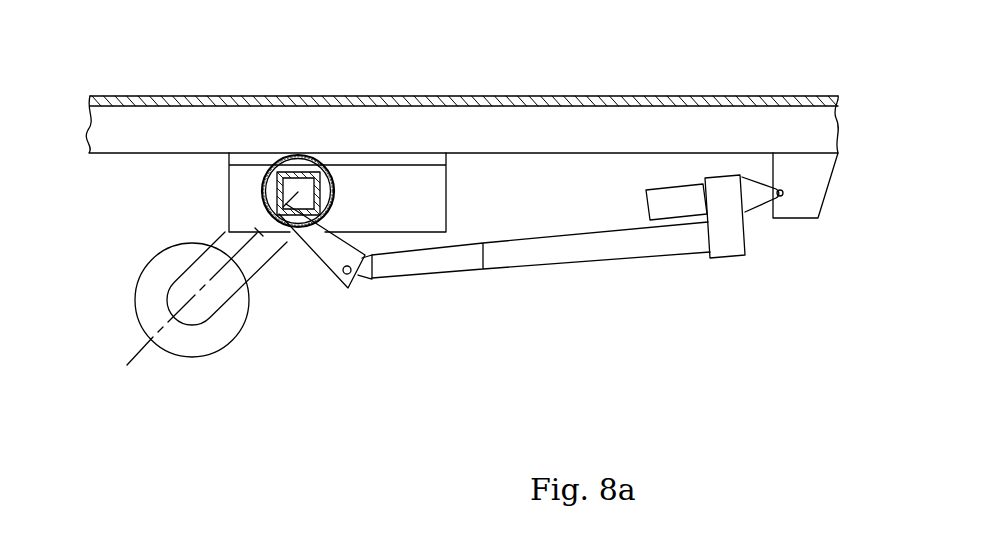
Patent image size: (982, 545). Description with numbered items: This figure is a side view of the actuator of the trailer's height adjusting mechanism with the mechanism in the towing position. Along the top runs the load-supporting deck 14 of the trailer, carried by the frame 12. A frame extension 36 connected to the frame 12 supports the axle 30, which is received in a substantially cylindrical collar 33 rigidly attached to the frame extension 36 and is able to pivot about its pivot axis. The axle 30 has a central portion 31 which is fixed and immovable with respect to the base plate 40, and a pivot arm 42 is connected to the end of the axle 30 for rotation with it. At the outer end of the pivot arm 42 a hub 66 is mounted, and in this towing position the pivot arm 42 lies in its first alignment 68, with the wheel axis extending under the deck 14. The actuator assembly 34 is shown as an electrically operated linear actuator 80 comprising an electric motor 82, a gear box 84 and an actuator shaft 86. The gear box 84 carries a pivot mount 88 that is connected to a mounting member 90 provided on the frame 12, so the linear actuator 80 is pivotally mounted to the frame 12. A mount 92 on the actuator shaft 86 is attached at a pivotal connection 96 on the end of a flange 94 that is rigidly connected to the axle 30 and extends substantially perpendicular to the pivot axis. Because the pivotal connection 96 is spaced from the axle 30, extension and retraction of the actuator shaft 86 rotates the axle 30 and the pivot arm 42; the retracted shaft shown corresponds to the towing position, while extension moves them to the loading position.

The frame 12 is at (92, 155).
The deck 14 is at (307, 96).
The axle 30 is at (280, 154).
The central portion 31 is at (275, 183).
The collar 33 is at (313, 160).
The actuator assembly 34 is at (797, 248).
The frame extension 36 is at (449, 196).
The base plate 40 is at (287, 250).
The pivot arm 42 is at (262, 267).
The hub 66 is at (137, 321).
The first alignment 68 is at (140, 349).
The linear actuator 80 is at (587, 297).
The electric motor 82 is at (647, 190).
The gear box 84 is at (735, 258).
The actuator shaft 86 is at (500, 272).
The pivot mount 88 is at (753, 182).
The mounting member 90 is at (830, 182).
The mount 92 is at (356, 286).
The flange 94 is at (315, 262).
The pivotal connection 96 is at (341, 280).